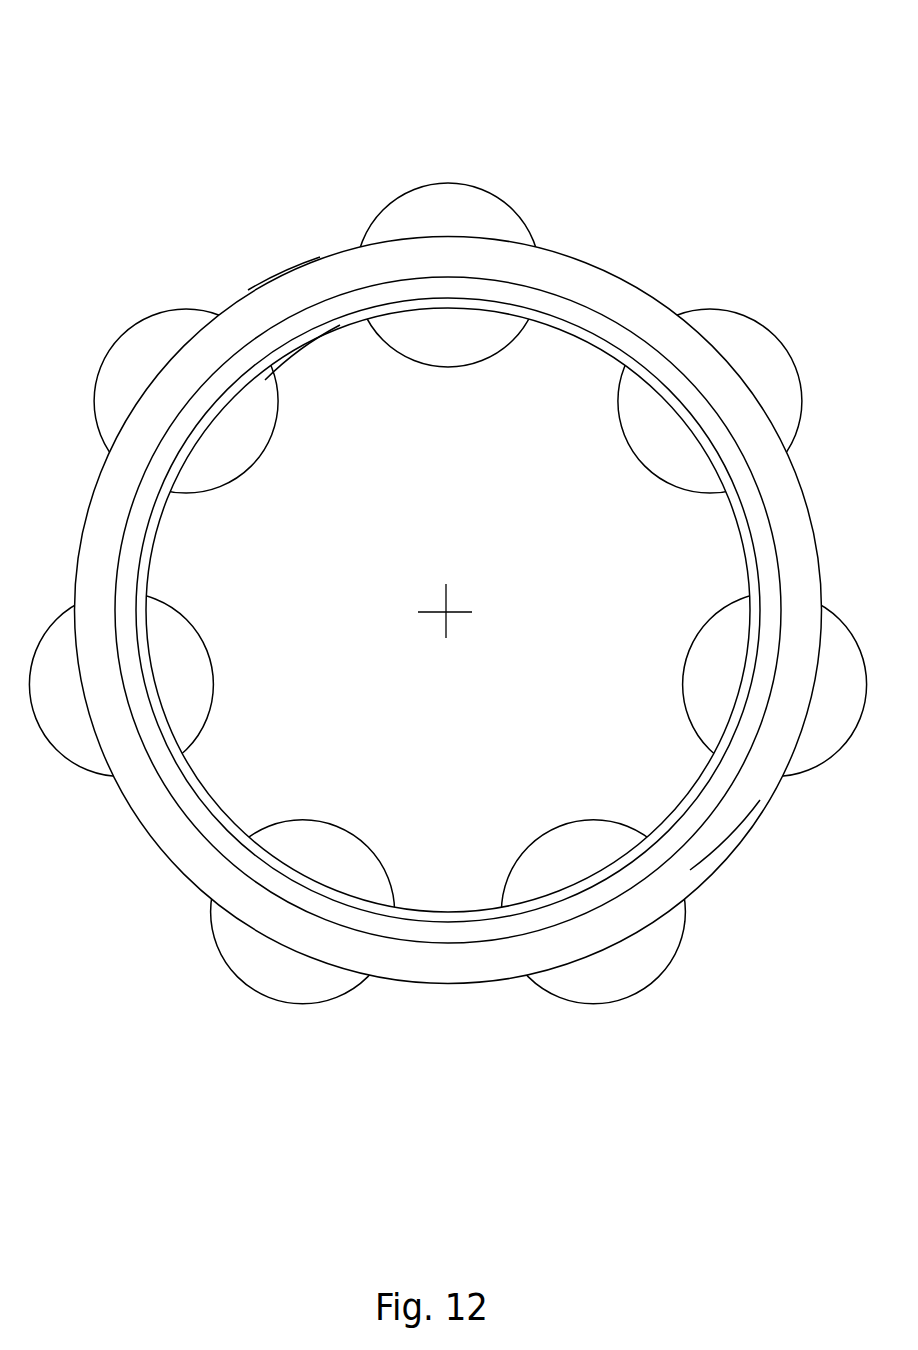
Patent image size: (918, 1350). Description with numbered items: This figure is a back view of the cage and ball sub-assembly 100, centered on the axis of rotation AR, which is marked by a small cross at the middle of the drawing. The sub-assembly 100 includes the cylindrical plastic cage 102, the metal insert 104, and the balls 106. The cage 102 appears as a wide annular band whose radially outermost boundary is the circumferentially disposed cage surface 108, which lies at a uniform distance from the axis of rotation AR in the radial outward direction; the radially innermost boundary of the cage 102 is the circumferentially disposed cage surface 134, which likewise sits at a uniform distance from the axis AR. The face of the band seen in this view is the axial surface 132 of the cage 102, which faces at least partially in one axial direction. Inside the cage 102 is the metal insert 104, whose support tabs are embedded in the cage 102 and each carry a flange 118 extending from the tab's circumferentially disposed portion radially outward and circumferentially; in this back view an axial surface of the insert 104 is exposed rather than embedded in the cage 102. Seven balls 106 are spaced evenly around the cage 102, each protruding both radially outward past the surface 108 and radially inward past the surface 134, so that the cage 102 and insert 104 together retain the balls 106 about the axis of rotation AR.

The cage and ball sub-assembly 100 is at (687, 65).
The cylindrical plastic cage 102 is at (250, 290).
The metal insert 104 is at (767, 502).
The balls 106 is at (460, 183).
The circumferentially disposed cage surface 108 is at (282, 277).
The flange 118 is at (767, 555).
The axial surface 132 is at (727, 833).
The circumferentially disposed cage surface 134 is at (305, 350).
The axis of rotation AR is at (446, 612).